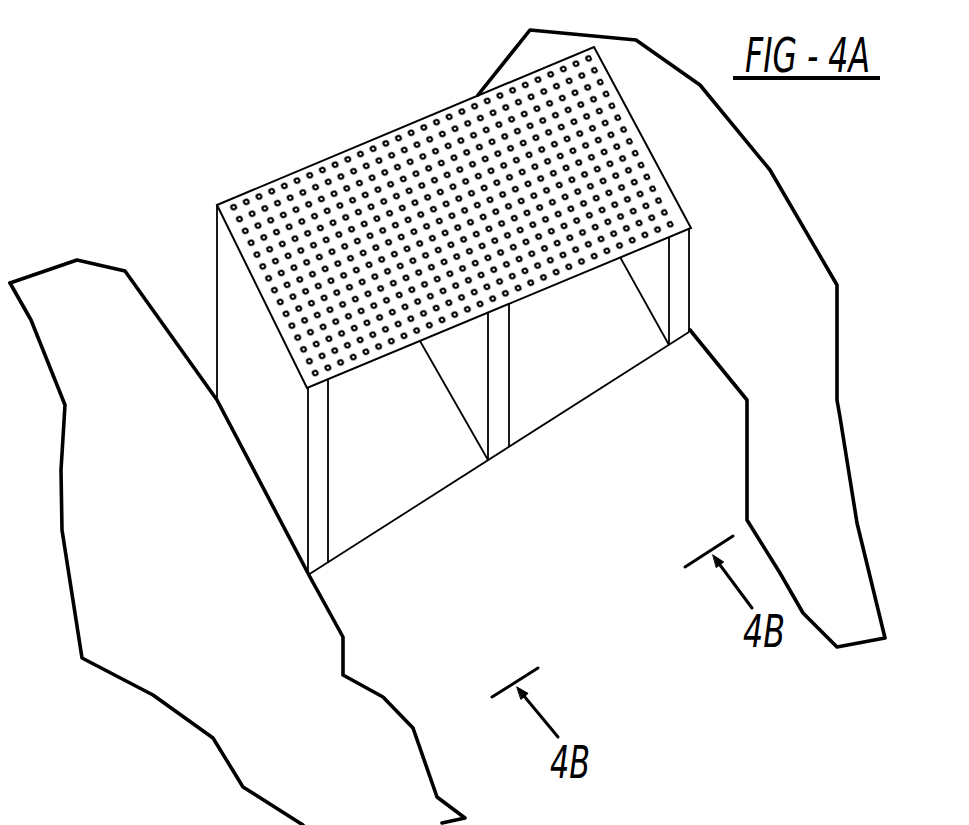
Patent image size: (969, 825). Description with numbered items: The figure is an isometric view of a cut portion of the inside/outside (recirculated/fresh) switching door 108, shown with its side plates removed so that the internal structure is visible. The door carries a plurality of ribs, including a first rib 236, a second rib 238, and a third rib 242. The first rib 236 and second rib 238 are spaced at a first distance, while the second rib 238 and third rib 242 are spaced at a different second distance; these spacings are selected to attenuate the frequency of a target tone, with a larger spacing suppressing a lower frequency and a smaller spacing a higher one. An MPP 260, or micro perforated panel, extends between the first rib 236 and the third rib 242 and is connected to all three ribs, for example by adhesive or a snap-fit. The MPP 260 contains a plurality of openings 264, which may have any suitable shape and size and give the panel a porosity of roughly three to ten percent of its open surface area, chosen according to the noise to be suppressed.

The inside/outside (recirculated/fresh) switching door 108 is at (597, 395).
The first rib 236 is at (288, 480).
The second rib 238 is at (472, 385).
The third rib 242 is at (660, 312).
The MPP 260 is at (414, 223).
The plurality of openings 264 is at (374, 146).